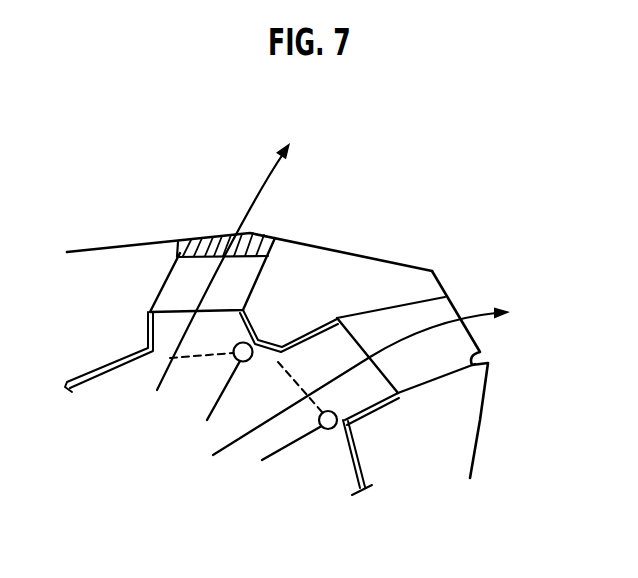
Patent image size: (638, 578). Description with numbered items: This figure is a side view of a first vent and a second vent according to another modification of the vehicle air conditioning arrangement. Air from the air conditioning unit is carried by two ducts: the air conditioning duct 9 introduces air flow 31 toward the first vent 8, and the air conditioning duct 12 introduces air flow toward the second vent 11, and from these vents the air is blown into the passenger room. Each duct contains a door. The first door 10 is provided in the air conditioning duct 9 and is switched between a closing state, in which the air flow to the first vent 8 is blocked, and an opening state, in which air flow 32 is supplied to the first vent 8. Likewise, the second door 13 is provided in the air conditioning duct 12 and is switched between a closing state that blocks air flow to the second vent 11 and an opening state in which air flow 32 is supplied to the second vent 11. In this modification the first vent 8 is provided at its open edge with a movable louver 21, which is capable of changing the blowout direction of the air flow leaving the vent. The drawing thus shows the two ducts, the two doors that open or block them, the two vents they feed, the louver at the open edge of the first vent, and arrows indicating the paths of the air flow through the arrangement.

The first vent 8 is at (478, 353).
The air conditioning duct 9 is at (363, 415).
The first door 10 is at (302, 438).
The second vent 11 is at (193, 247).
The air conditioning duct 12 is at (148, 333).
The second door 13 is at (208, 412).
The movable louver 21 is at (277, 221).
The air flow 31 is at (485, 317).
The air flow 32 is at (265, 172).